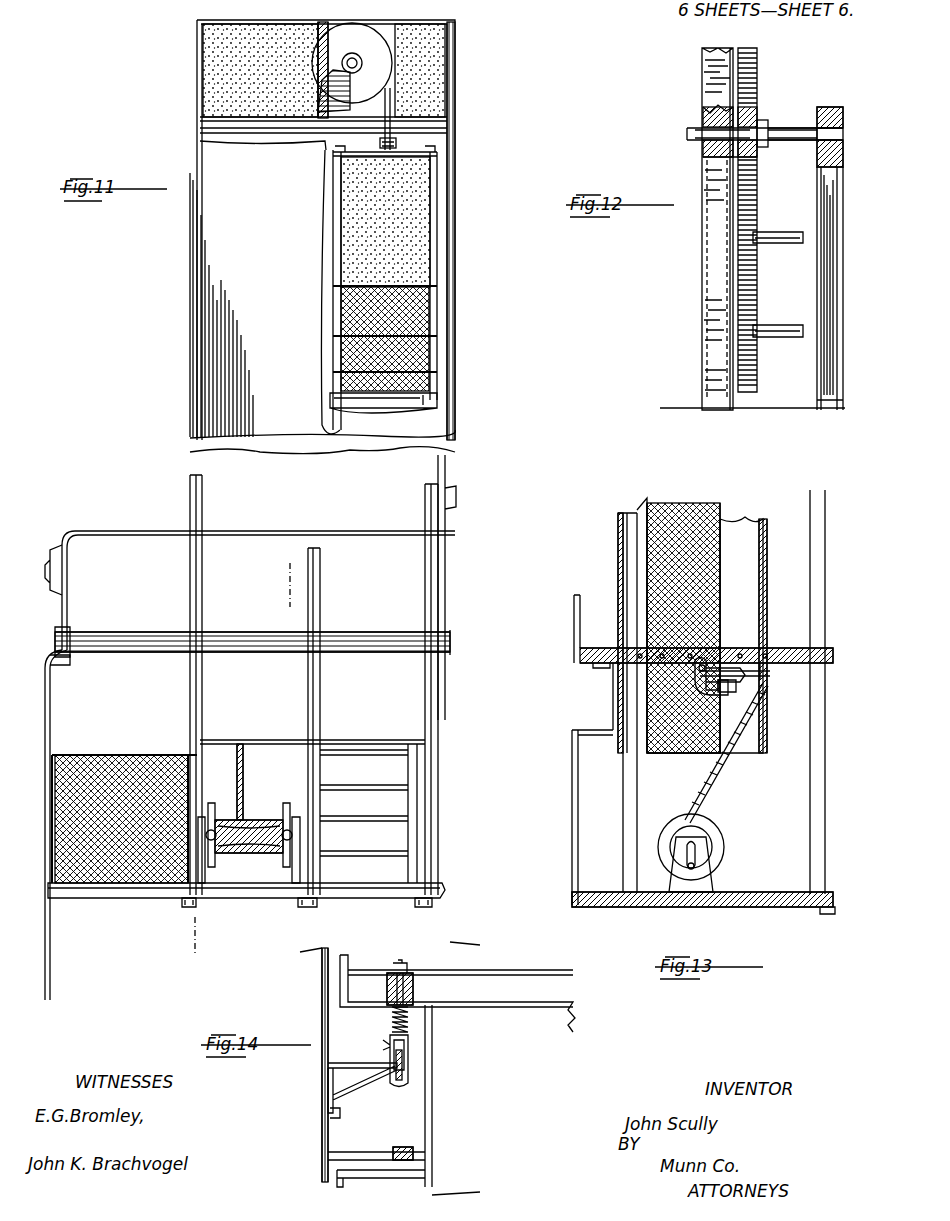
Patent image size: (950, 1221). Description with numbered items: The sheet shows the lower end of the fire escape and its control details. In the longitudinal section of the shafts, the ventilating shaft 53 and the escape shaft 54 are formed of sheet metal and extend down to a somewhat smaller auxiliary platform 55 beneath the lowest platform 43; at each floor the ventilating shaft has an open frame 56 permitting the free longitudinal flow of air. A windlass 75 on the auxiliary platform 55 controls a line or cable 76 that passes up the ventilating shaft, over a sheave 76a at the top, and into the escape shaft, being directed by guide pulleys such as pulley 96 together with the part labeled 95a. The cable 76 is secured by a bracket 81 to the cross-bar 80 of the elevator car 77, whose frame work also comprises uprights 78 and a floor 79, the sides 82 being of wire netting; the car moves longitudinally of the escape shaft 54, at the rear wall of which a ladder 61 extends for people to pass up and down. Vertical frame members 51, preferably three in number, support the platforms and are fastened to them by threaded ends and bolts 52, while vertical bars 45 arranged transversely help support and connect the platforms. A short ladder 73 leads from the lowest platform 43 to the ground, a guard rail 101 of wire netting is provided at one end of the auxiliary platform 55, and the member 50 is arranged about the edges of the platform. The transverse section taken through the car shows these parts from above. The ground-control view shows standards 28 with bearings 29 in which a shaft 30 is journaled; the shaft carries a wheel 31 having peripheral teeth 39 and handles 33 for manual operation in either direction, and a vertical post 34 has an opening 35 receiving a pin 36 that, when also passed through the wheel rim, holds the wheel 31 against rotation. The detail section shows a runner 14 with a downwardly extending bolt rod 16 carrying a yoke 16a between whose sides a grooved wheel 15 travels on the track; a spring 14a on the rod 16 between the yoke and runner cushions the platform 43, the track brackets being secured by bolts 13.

In FIG. 11, the bolts 13 is at (231, 758).
In FIG. 14, the runner 14 is at (392, 1008).
In FIG. 14, the springs 14a is at (408, 1025).
In FIG. 14, the grooved wheel 15 is at (408, 1045).
In FIG. 14, the bolt rods 16 is at (413, 988).
In FIG. 14, the yokes 16a is at (408, 1060).
In FIG. 12, the standards 28 is at (830, 272).
In FIG. 12, the bearings 29 is at (830, 107).
In FIG. 12, the shaft 30 is at (820, 128).
In FIG. 12, the wheel 31 is at (740, 218).
In FIG. 12, the handles 33 is at (780, 355).
In FIG. 12, the vertical post 34 is at (703, 68).
In FIG. 12, the opening 35 is at (703, 113).
In FIG. 12, the pin 36 is at (688, 135).
In FIG. 12, the peripheral teeth 39 is at (745, 392).
In FIG. 11, the platforms 43 is at (358, 632).
In FIG. 13, the platforms 43 is at (598, 648).
In FIG. 13, the vertical bars 45 is at (637, 793).
In FIG. 11, the rod 50 is at (385, 520).
In FIG. 11, the vertical frame members 51 is at (456, 480).
In FIG. 11, the bolts 52 is at (428, 920).
In FIG. 11, the ventilating shaft 53 is at (205, 322).
In FIG. 11, the escape shaft 54 is at (447, 185).
In FIG. 11, the auxiliary platform 55 is at (355, 888).
In FIG. 13, the auxiliary platform 55 is at (610, 907).
In FIG. 13, the open frame 56 is at (760, 640).
In FIG. 11, the ladder 61 is at (417, 805).
In FIG. 11, the short ladder 73 is at (50, 728).
In FIG. 11, the windlass 75 is at (268, 820).
In FIG. 13, the windlass 75 is at (714, 845).
In FIG. 11, the line 76 is at (244, 760).
In FIG. 13, the line 76 is at (722, 768).
In FIG. 11, the sheave 76a is at (362, 63).
In FIG. 11, the elevator car 77 is at (386, 239).
In FIG. 11, the uprights 78 is at (437, 240).
In FIG. 11, the floor 79 is at (425, 385).
In FIG. 11, the cross-bar 80 is at (430, 152).
In FIG. 11, the bracket 81 is at (392, 140).
In FIG. 11, the sides 82 is at (428, 306).
In FIG. 13, the clamp 95a is at (712, 655).
In FIG. 13, the guide pulley 96 is at (724, 698).
In FIG. 11, the guard rail 101 is at (112, 868).